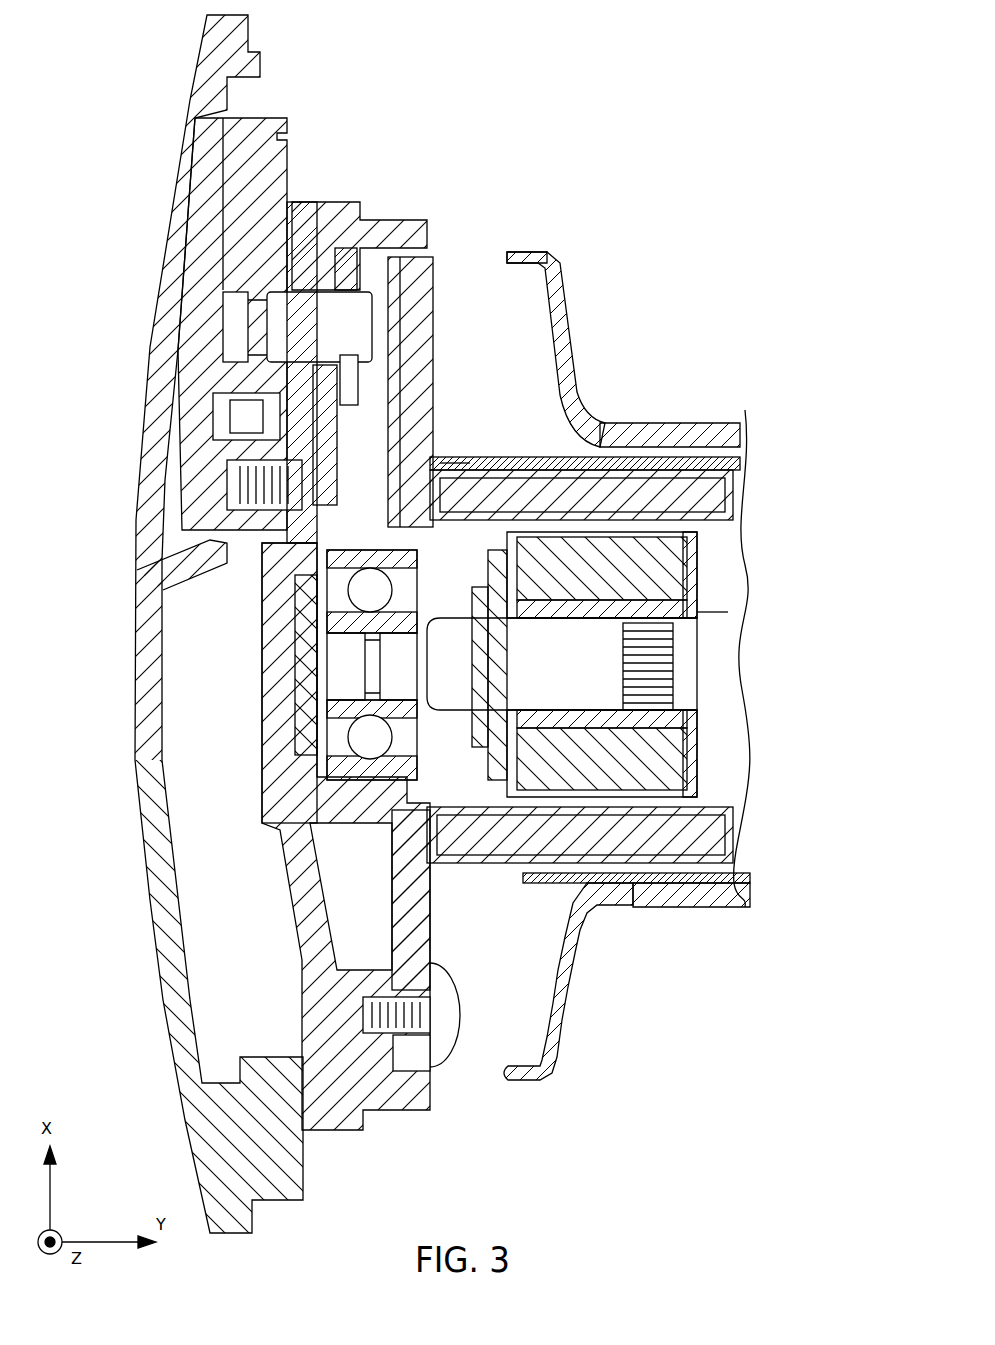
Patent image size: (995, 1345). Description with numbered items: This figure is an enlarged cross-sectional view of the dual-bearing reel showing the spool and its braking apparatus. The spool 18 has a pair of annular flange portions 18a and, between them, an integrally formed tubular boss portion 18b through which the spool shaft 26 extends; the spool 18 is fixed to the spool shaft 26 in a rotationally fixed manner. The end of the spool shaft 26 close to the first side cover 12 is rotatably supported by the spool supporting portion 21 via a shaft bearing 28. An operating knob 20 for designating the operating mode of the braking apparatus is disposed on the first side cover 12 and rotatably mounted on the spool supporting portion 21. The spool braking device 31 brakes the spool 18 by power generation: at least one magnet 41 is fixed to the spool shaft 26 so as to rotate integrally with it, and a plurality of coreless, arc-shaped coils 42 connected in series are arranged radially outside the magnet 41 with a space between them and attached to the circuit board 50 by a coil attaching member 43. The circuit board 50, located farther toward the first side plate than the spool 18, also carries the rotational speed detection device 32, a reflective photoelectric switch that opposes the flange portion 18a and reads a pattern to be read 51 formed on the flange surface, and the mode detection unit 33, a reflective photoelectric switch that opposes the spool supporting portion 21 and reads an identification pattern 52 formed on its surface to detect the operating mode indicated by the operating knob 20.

The first side cover 12 is at (178, 1040).
The spool 18 is at (636, 641).
The flange portion 18a is at (553, 300).
The boss portion 18b is at (685, 440).
The operating knob 20 is at (170, 360).
The spool supporting portion 21 is at (263, 627).
The spool shaft 26 is at (712, 675).
The shaft bearing 28 is at (263, 740).
The spool braking device 31 is at (530, 457).
The rotational speed detection device 32 is at (444, 288).
The mode detection unit 33 is at (385, 452).
The magnet 41 is at (698, 572).
The coil 42 is at (705, 500).
The coil attaching member 43 is at (457, 447).
The circuit board 50 is at (448, 282).
The pattern to be read 51 is at (535, 300).
The identification pattern 52 is at (350, 380).